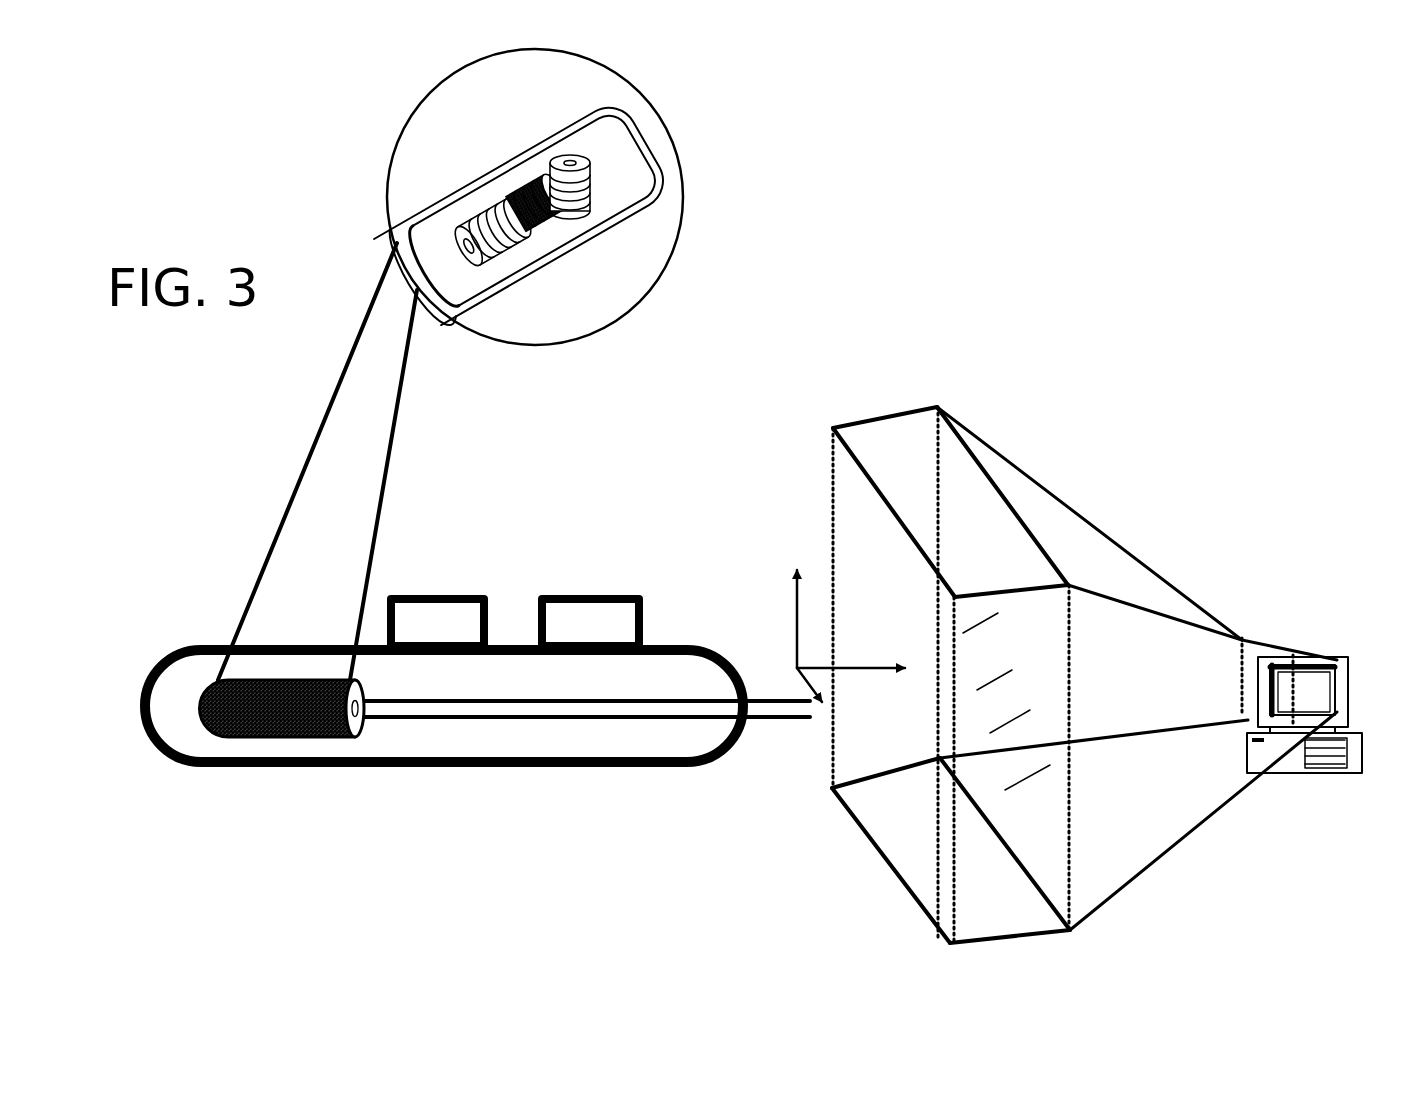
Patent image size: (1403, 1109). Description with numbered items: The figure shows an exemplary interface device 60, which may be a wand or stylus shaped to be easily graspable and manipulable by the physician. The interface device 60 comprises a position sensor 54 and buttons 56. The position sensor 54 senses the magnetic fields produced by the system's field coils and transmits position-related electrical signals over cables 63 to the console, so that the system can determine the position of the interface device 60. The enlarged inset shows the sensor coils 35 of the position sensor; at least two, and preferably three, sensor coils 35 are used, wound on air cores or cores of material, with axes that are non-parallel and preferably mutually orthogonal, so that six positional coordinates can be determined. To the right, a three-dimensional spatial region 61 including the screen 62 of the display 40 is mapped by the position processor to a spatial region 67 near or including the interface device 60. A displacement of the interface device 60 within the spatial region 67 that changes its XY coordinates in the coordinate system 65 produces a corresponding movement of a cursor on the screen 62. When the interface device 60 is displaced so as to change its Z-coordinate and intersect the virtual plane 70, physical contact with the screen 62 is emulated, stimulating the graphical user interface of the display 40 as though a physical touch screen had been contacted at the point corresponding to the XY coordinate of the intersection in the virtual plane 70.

The sensor coils 35 is at (440, 200).
The display 40 is at (1290, 690).
The position sensor 54 is at (247, 713).
The buttons 56 is at (450, 592).
The interface device 60 is at (472, 767).
The 3-dimensional spatial region 61 is at (1255, 667).
The screen 62 is at (1322, 692).
The cables 63 is at (778, 720).
The coordinate system 65 is at (784, 630).
The spatial region 67 is at (903, 442).
The virtual plane 70 is at (1062, 838).